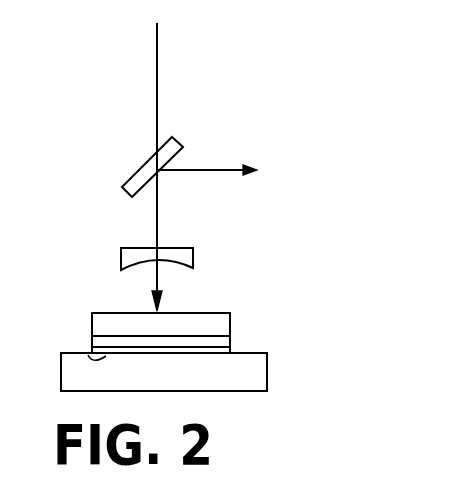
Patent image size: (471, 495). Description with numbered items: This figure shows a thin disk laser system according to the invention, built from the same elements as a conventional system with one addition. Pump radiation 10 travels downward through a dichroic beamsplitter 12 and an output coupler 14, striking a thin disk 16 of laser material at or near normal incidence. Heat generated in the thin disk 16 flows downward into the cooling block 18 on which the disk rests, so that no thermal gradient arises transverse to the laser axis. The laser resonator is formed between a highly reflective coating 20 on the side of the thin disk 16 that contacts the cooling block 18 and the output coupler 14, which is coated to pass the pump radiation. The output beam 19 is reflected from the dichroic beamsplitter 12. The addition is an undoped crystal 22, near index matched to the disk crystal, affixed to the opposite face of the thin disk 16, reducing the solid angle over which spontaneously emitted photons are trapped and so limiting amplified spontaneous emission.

The pump radiation 10 is at (157, 91).
The dichroic beamsplitter 12 is at (135, 170).
The output coupler 14 is at (132, 248).
The thin disk 16 is at (232, 343).
The cooling block 18 is at (267, 368).
The output beam 19 is at (225, 168).
The highly reflective coating 20 is at (89, 356).
The undoped crystal 22 is at (212, 312).